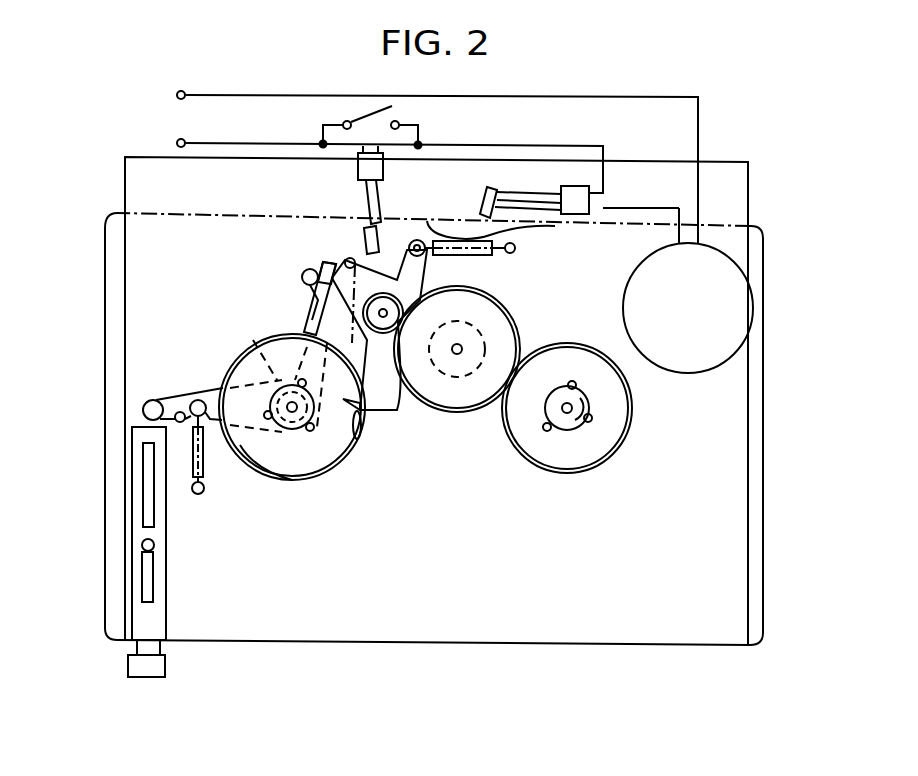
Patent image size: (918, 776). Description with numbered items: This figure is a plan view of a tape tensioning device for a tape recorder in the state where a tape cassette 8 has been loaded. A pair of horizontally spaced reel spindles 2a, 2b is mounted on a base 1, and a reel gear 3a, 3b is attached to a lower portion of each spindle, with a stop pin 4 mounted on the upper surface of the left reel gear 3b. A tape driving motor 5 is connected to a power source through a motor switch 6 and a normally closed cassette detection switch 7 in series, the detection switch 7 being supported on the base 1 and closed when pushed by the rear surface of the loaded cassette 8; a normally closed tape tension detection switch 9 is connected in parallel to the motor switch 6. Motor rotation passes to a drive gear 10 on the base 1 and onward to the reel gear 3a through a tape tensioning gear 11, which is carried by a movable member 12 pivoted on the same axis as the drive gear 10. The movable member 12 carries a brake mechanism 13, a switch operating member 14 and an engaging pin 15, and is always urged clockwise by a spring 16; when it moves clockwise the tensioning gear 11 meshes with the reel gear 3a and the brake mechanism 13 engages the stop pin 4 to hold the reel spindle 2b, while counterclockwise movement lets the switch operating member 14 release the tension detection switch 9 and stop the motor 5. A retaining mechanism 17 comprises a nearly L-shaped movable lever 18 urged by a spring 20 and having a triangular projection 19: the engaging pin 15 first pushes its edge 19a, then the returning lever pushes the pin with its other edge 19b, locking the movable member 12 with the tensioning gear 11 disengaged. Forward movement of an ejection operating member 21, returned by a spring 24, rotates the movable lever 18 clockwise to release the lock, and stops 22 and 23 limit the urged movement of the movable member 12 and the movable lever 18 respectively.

The base 1 is at (752, 187).
The reel spindle 2a is at (570, 432).
The reel spindle 2b is at (284, 445).
The reel gear 3a is at (620, 450).
The reel gear 3b is at (338, 478).
The stop pin 4 is at (338, 438).
The tape driving motor 5 is at (690, 374).
The motor switch 6 is at (352, 113).
The cassette detection switch 7 is at (578, 214).
The tape cassette 8 is at (449, 220).
The tape tension detection switch 9 is at (358, 168).
The drive gear 10 is at (391, 411).
The tape tensioning gear 11 is at (468, 414).
The movable member 12 is at (403, 400).
The brake mechanism 13 is at (344, 400).
The switch operating member 14 is at (420, 262).
The engaging pin 15 is at (308, 268).
The spring 16 is at (518, 262).
The retaining mechanism 17 is at (216, 495).
The movable lever 18 is at (213, 423).
The triangular projection 19 is at (303, 290).
The edge 19a is at (305, 283).
The edge 19b is at (308, 305).
The spring 20 is at (215, 482).
The ejection operating member 21 is at (168, 618).
The stop 22 is at (350, 258).
The stop 23 is at (181, 423).
The spring 24 is at (143, 508).